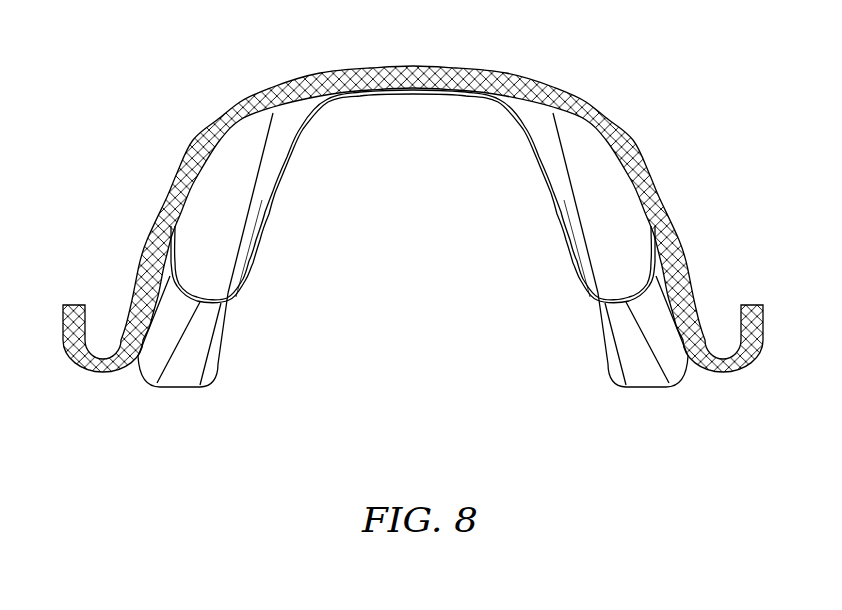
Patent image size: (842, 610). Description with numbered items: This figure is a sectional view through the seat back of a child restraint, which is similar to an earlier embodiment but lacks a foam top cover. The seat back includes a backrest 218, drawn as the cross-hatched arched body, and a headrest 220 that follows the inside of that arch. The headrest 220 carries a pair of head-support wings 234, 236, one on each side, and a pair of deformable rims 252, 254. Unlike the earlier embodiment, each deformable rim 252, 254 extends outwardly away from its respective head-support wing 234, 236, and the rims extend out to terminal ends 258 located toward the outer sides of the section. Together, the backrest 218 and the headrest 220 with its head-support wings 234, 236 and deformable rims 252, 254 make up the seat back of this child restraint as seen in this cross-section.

The backrest 218 is at (416, 64).
The headrest 220 is at (562, 142).
The head-support wing 234 is at (262, 155).
The head-support wing 236 is at (566, 180).
The deformable rim 252 is at (210, 320).
The deformable rim 254 is at (617, 330).
The terminal ends 258 is at (162, 217).